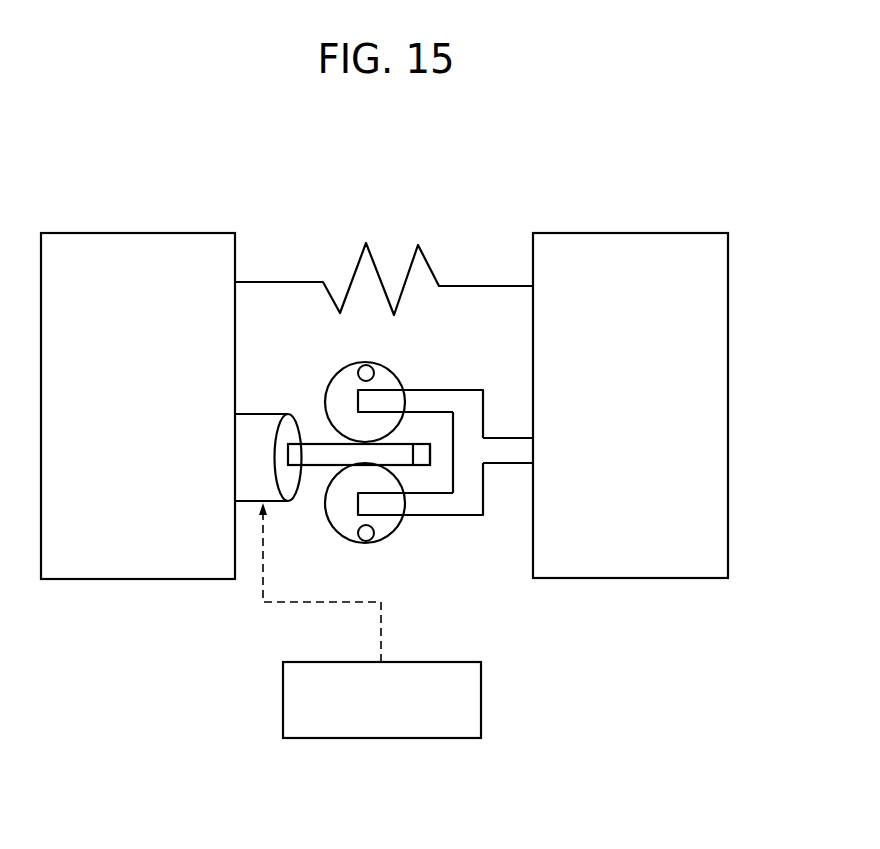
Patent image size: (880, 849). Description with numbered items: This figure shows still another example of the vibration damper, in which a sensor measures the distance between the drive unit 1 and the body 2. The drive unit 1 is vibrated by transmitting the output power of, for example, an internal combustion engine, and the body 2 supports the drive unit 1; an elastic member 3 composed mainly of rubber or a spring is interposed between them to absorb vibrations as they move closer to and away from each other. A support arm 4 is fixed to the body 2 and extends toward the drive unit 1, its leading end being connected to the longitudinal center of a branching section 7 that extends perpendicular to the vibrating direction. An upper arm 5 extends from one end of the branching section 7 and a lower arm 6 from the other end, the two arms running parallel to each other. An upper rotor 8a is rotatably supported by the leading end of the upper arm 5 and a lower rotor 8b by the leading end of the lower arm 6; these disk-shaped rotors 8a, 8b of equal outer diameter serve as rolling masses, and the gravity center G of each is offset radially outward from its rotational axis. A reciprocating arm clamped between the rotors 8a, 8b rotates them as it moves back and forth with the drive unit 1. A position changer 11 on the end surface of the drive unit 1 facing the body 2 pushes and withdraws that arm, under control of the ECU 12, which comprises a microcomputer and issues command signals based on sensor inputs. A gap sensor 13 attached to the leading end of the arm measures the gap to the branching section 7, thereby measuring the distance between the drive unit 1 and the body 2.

The drive unit 1 is at (140, 232).
The body 2 is at (638, 232).
The elastic member 3 is at (368, 243).
The support arm 4 is at (508, 452).
The upper arm 5 is at (447, 398).
The lower arm 6 is at (465, 513).
The branching section 7 is at (473, 492).
The upper rotor 8a is at (343, 383).
The lower rotor 8b is at (393, 537).
The gravity center G is at (366, 365).
The position changer 11 is at (257, 413).
The ECU 12 is at (483, 700).
The gap sensor 13 is at (423, 442).